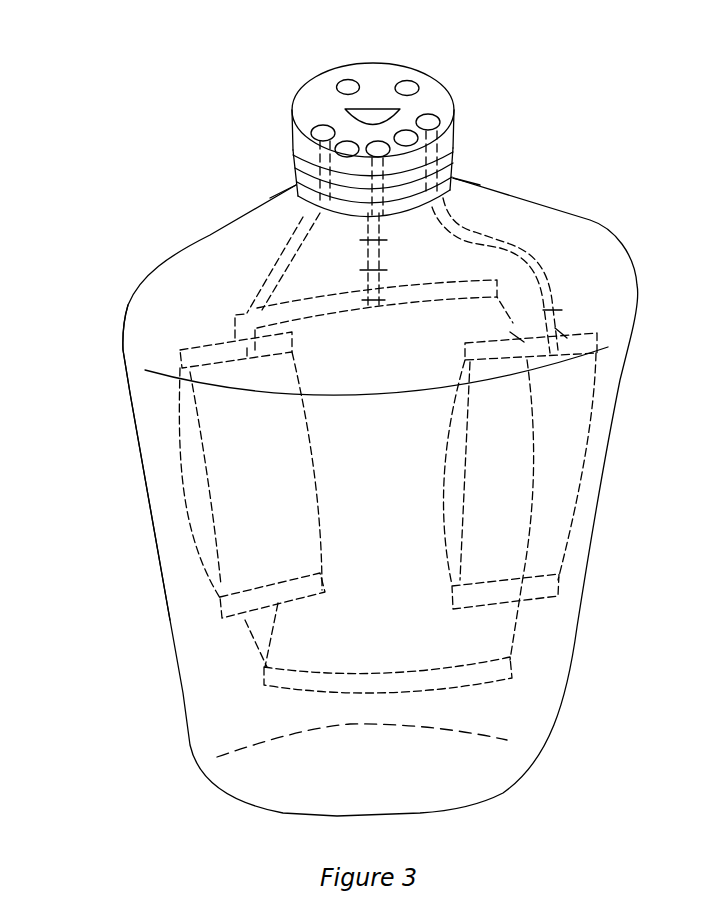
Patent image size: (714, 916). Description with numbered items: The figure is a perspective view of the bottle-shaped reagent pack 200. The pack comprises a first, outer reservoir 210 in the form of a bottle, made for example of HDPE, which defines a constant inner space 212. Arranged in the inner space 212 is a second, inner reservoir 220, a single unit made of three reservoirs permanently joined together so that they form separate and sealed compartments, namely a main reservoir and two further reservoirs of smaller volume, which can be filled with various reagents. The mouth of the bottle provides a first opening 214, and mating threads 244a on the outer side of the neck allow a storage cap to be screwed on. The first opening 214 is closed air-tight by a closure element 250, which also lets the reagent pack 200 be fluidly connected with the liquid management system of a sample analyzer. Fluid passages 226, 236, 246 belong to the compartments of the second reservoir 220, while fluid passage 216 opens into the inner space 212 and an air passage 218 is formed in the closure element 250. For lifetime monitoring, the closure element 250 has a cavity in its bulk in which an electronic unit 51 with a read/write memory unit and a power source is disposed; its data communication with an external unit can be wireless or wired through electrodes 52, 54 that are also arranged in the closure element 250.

The reagent pack 200 is at (117, 107).
The first reservoir 210 is at (127, 307).
The inner space 212 is at (140, 347).
The second reservoir 220 is at (238, 477).
The closure element 250 is at (305, 97).
The first opening 214 is at (295, 143).
The fluid passage 216 is at (335, 146).
The air passage 218 is at (445, 139).
The fluid passage 226 is at (318, 129).
The fluid passage 236 is at (455, 158).
The mating threads 244a is at (290, 187).
The fluid passage 246 is at (438, 116).
The electrode 52 is at (348, 78).
The electronic unit 51 is at (371, 115).
The electrode 54 is at (413, 85).